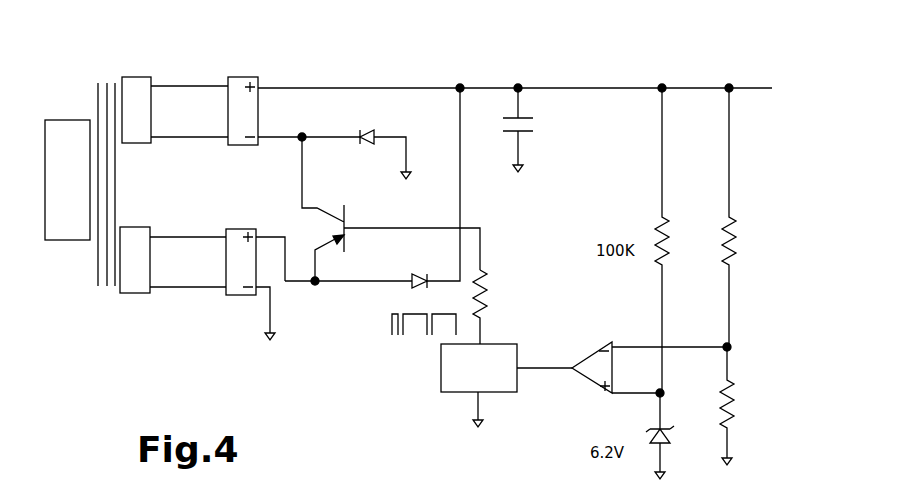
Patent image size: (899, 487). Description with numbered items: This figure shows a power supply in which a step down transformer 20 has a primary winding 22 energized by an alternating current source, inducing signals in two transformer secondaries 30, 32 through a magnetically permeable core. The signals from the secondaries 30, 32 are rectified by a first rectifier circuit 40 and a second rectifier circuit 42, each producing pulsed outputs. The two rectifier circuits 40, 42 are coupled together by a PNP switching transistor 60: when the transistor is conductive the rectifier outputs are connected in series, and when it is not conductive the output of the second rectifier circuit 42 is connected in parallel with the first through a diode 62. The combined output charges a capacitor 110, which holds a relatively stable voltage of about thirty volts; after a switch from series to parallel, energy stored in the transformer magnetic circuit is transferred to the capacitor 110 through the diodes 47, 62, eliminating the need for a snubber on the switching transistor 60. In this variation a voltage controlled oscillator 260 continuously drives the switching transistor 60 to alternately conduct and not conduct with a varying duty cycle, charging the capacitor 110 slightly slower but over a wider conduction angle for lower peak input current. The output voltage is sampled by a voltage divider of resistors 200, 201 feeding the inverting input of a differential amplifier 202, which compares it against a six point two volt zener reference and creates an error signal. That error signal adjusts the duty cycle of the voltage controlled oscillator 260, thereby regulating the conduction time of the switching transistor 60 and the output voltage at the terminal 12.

The terminal 12 is at (757, 88).
The step down transformer 20 is at (71, 316).
The primary winding 22 is at (68, 137).
The transformer secondary 30 is at (150, 77).
The transformer secondary 32 is at (146, 293).
The first rectifier circuit 40 is at (240, 85).
The second rectifier circuit 42 is at (235, 287).
The diode 47 is at (368, 134).
The switching transistor 60 is at (350, 215).
The diode 62 is at (425, 270).
The capacitor 110 is at (528, 125).
The resistor 200 is at (736, 250).
The resistor 201 is at (734, 412).
The differential amplifier 202 is at (593, 368).
The voltage controlled oscillator 260 is at (448, 381).